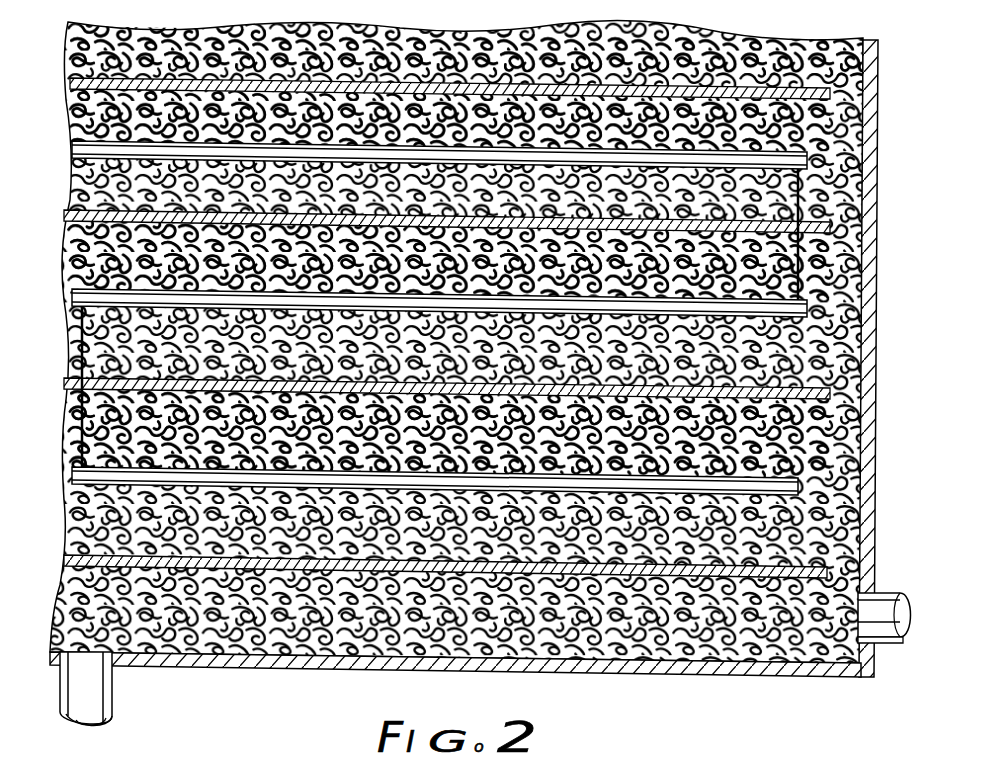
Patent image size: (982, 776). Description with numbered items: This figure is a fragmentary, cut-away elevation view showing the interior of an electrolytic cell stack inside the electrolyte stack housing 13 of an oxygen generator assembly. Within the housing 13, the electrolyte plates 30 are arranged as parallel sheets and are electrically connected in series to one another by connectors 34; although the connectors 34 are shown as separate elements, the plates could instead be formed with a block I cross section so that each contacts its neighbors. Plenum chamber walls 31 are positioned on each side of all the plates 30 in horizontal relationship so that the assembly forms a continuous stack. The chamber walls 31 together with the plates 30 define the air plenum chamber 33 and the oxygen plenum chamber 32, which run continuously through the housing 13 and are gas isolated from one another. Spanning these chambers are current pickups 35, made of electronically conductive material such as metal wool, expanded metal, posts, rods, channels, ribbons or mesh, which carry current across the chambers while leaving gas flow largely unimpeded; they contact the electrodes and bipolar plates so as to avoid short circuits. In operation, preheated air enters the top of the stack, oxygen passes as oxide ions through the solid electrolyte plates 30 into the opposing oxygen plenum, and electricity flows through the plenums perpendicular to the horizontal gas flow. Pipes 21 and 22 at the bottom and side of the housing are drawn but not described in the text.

The electrolyte stack housing 13 is at (882, 514).
The inlet pipe 21 is at (112, 676).
The outlet pipe 22 is at (912, 568).
The plates 30 is at (541, 113).
The plenum chamber walls 31 is at (344, 84).
The oxygen plenum chamber 32 is at (468, 204).
The air plenum chamber 33 is at (468, 131).
The connectors 34 is at (806, 198).
The current pickups 35 is at (511, 700).